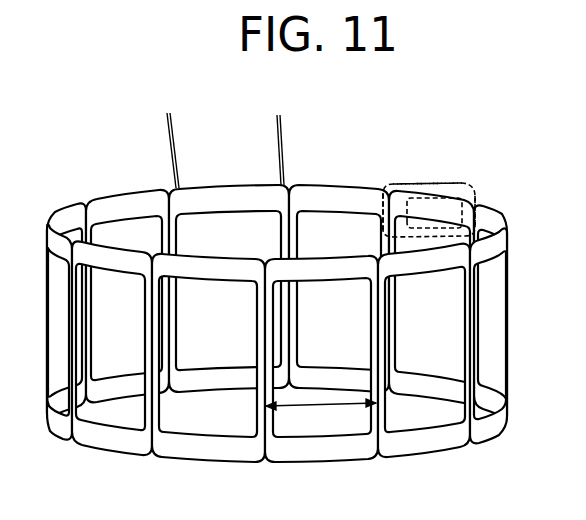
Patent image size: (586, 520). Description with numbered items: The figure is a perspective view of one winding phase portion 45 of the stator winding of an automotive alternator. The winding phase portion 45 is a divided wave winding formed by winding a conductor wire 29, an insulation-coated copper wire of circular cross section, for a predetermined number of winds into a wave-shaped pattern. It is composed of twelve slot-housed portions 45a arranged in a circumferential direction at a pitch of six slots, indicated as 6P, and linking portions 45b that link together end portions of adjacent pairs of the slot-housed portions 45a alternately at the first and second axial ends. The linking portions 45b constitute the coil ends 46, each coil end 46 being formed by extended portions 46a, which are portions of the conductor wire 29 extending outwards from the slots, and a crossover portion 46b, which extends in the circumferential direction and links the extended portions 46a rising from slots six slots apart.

The winding phase portion 45 is at (80, 118).
The slot-housed portion 45a is at (321, 359).
The linking portion 45b is at (214, 283).
The conductor wire 29 is at (225, 150).
The coil end 46 is at (492, 145).
The extended portion 46a is at (395, 183).
The crossover portion 46b is at (437, 184).
The pitch of six slots 6P is at (321, 416).